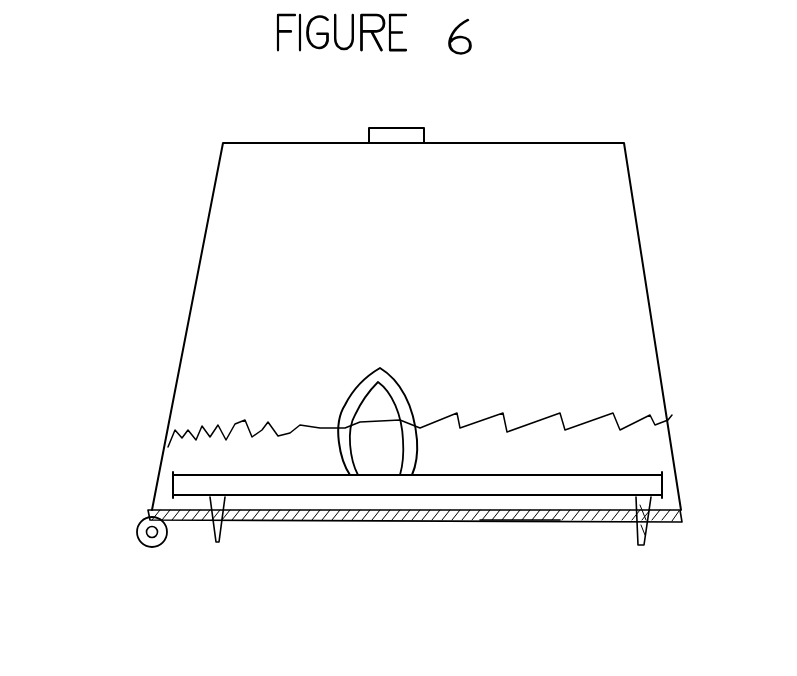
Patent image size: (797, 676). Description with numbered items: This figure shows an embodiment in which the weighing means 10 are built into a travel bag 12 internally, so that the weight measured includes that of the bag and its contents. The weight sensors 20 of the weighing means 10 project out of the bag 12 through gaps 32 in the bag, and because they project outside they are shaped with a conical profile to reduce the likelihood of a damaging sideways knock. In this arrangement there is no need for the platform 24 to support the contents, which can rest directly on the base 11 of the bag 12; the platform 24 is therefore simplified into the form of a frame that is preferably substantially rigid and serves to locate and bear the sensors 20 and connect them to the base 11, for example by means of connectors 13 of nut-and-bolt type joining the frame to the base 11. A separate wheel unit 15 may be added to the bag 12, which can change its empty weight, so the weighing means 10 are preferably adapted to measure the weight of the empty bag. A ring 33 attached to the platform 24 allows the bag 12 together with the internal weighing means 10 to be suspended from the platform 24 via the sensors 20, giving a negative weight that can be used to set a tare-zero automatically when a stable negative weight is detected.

The weighing means 10 is at (722, 430).
The base 11 is at (552, 537).
The travel bag 12 is at (683, 237).
The connectors 13 is at (425, 558).
The wheel unit 15 is at (127, 575).
The weight sensors 20 is at (685, 555).
The platform 24 is at (247, 457).
The gaps 32 is at (225, 573).
The ring 33 is at (375, 400).